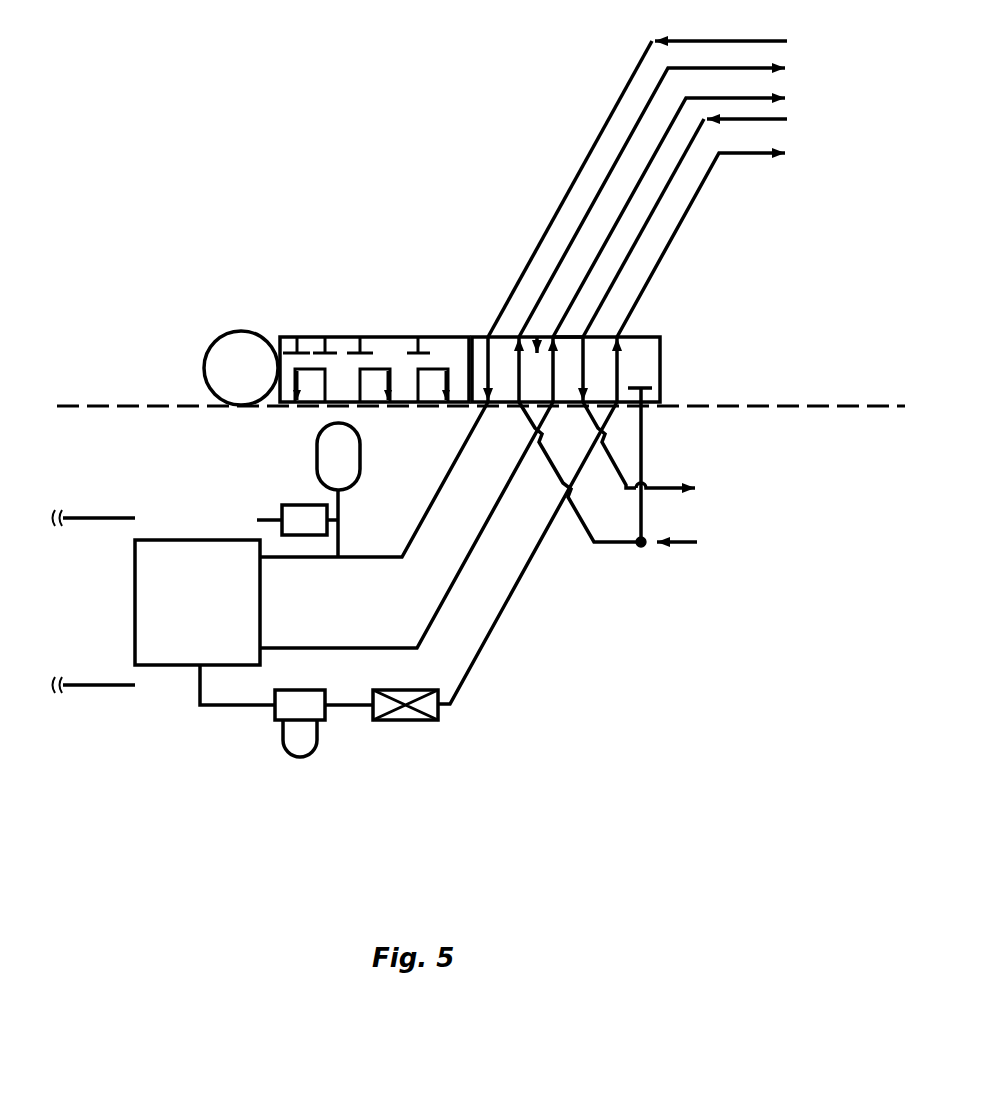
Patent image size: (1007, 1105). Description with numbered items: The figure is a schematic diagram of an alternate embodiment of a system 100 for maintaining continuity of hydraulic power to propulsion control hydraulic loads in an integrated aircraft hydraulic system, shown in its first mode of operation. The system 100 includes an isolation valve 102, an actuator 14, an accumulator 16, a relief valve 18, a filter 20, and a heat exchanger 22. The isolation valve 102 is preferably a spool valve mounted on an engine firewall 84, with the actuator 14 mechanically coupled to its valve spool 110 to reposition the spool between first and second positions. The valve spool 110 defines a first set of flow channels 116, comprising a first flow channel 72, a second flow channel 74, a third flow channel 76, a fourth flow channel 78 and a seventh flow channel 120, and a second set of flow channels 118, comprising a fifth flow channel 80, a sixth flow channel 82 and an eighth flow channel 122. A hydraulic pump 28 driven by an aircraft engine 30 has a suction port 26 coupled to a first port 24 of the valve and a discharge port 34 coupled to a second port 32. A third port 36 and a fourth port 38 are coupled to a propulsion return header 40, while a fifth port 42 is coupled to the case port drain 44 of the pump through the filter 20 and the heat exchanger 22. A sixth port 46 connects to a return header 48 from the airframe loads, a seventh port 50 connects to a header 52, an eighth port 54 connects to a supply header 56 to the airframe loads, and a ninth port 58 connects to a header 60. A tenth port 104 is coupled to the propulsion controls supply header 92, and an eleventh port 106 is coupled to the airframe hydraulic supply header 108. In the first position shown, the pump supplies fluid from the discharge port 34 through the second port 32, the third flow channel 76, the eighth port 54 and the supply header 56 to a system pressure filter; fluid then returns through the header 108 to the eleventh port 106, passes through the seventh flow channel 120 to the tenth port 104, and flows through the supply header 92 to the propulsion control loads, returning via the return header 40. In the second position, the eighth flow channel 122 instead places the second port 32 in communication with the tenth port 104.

The actuator 14 is at (208, 336).
The accumulator 16 is at (366, 466).
The relief valve 18 is at (296, 497).
The filter 20 is at (283, 745).
The heat exchanger 22 is at (407, 728).
The first port 24 is at (483, 410).
The suction port 26 is at (265, 563).
The hydraulic pump 28 is at (175, 540).
The aircraft engine 30 is at (104, 587).
The second port 32 is at (567, 408).
The discharge port 34 is at (265, 642).
The third port 36 is at (512, 415).
The fourth port 38 is at (645, 410).
The propulsion return header 40 is at (685, 540).
The fifth port 42 is at (615, 408).
The case port drain 44 is at (195, 671).
The sixth port 46 is at (488, 337).
The return header 48 is at (757, 40).
The seventh port 50 is at (520, 337).
The header 52 is at (763, 67).
The eighth port 54 is at (556, 337).
The supply header 56 is at (763, 97).
The ninth port 58 is at (617, 337).
The header 60 is at (757, 154).
The first flow channel 72 is at (506, 375).
The second flow channel 74 is at (536, 382).
The third flow channel 76 is at (569, 375).
The fourth flow channel 78 is at (640, 380).
The fifth flow channel 80 is at (322, 378).
The sixth flow channel 82 is at (447, 352).
The engine firewall 84 is at (101, 396).
The propulsion controls supply header 92 is at (667, 487).
The system 100 is at (720, 684).
The isolation valve 102 is at (432, 327).
The tenth port 104 is at (580, 410).
The eleventh port 106 is at (586, 337).
The airframe hydraulic supply header 108 is at (767, 120).
The valve spool 110 is at (666, 371).
The first set of flow channels 116 is at (538, 337).
The second set of flow channels 118 is at (342, 351).
The seventh flow channel 120 is at (578, 365).
The eighth flow channel 122 is at (362, 380).